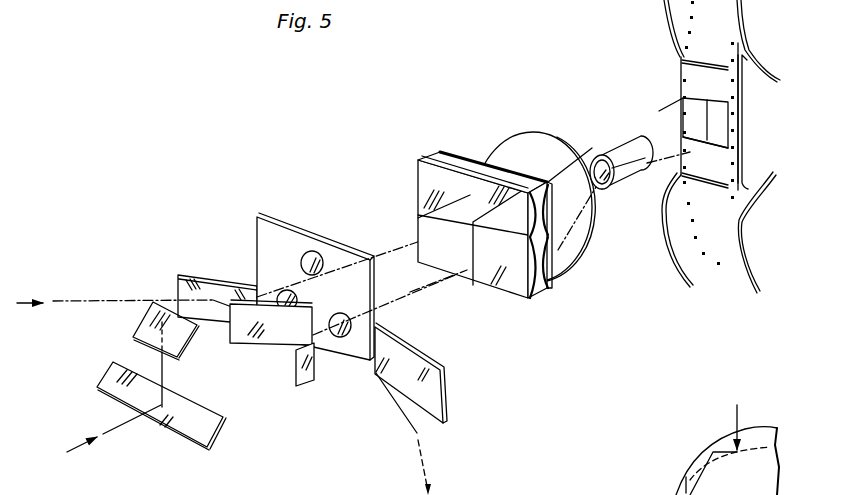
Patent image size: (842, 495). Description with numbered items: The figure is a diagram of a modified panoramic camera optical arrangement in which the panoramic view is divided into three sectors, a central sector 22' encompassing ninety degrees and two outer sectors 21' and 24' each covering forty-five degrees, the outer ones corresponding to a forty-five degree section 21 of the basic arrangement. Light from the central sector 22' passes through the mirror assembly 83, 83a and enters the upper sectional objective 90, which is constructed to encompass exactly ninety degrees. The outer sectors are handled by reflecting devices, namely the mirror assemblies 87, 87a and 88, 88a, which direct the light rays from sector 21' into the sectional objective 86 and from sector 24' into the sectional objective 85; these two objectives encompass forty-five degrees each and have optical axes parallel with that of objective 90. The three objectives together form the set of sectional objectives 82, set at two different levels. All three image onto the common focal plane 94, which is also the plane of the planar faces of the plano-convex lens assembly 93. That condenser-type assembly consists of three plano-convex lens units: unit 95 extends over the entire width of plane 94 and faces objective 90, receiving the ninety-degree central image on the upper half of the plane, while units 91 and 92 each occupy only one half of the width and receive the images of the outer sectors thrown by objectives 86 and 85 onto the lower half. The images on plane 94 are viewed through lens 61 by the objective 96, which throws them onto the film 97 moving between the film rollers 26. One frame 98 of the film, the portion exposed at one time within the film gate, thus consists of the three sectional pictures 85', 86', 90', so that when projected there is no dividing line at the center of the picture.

The outer sector of panoramic view 24' is at (57, 278).
The central sector of panoramic view 22' is at (114, 443).
The mirror assembly 83 is at (143, 328).
The mirror assembly 83a is at (190, 407).
The mirror assembly 88a is at (182, 275).
The mirror assembly 88 is at (260, 332).
The sectional objective 86 is at (262, 279).
The upper sectional objective 90 is at (332, 244).
The sectional objective 85 is at (337, 355).
The mirror assembly 87 is at (296, 386).
The mirror assembly 87a is at (446, 402).
The set of sectional objectives 82 is at (376, 300).
The outer sector of panoramic view 21' is at (442, 434).
The lens 61 is at (567, 242).
The focal plane 94 is at (425, 192).
The plano-convex lens unit 95 is at (438, 178).
The plano-convex lens unit 91 is at (515, 287).
The plano-convex lens unit 92 is at (432, 263).
The plano-convex lens assembly 93 is at (556, 280).
The objective 96 is at (628, 175).
The film 97 is at (712, 220).
The sectional picture 86' is at (678, 124).
The frame of the film 98 is at (727, 120).
The sectional picture 90' is at (733, 152).
The sectional picture 85' is at (752, 122).
The section of panoramic view 21 is at (727, 450).
The film rollers 26 is at (720, 490).